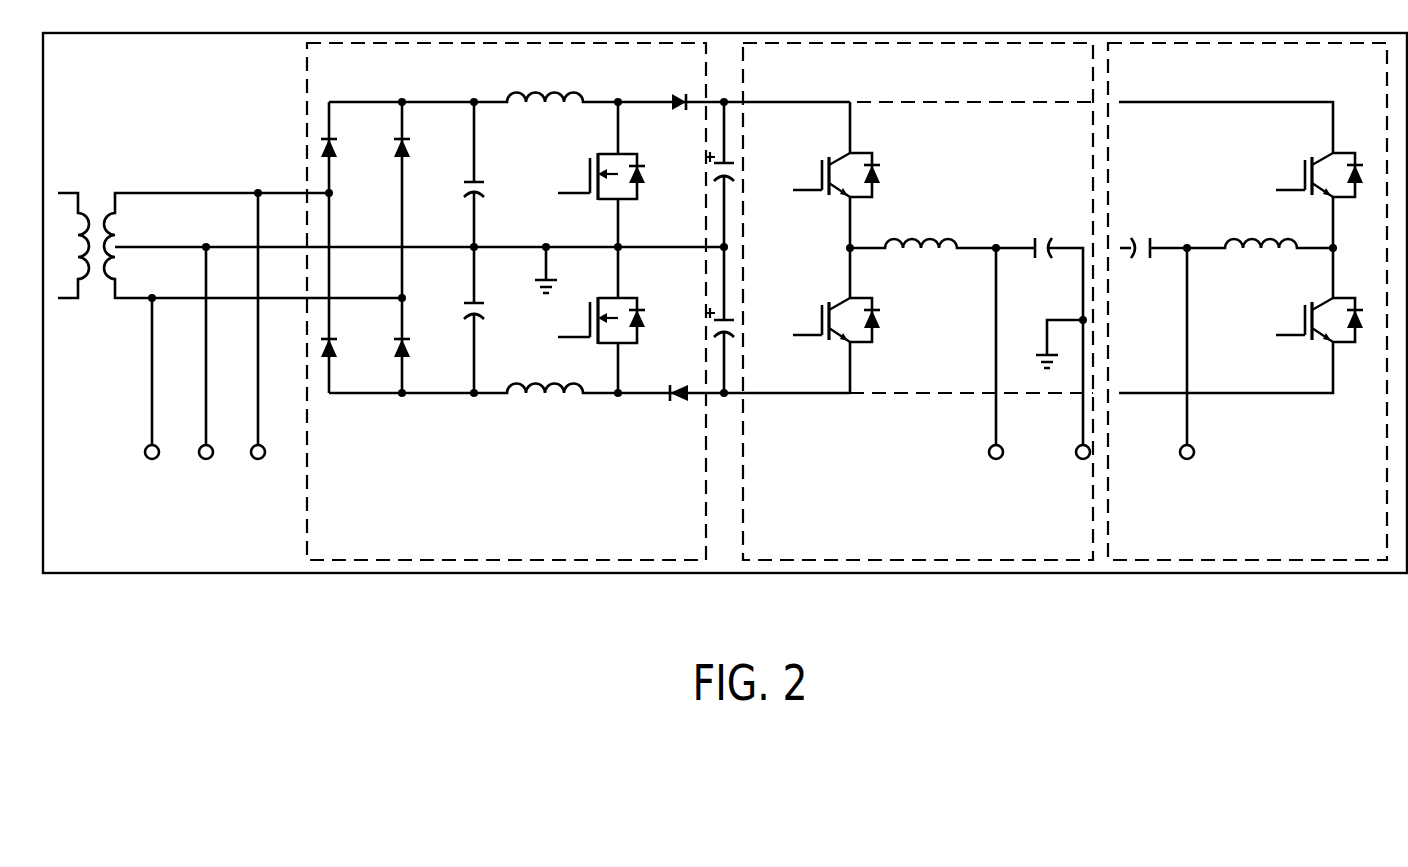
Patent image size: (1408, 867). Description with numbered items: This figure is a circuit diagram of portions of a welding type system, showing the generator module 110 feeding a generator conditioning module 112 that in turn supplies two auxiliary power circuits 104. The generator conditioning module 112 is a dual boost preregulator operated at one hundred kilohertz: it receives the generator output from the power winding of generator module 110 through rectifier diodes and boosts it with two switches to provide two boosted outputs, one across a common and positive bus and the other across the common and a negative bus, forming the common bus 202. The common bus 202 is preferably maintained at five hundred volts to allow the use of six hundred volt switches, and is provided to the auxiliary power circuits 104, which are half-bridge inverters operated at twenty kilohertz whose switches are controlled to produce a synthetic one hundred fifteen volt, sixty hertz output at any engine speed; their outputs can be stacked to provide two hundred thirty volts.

The generator module 110 is at (92, 340).
The generator conditioning module 112 is at (503, 560).
The auxiliary power circuit 104 is at (922, 560).
The common bus 202 is at (818, 103).